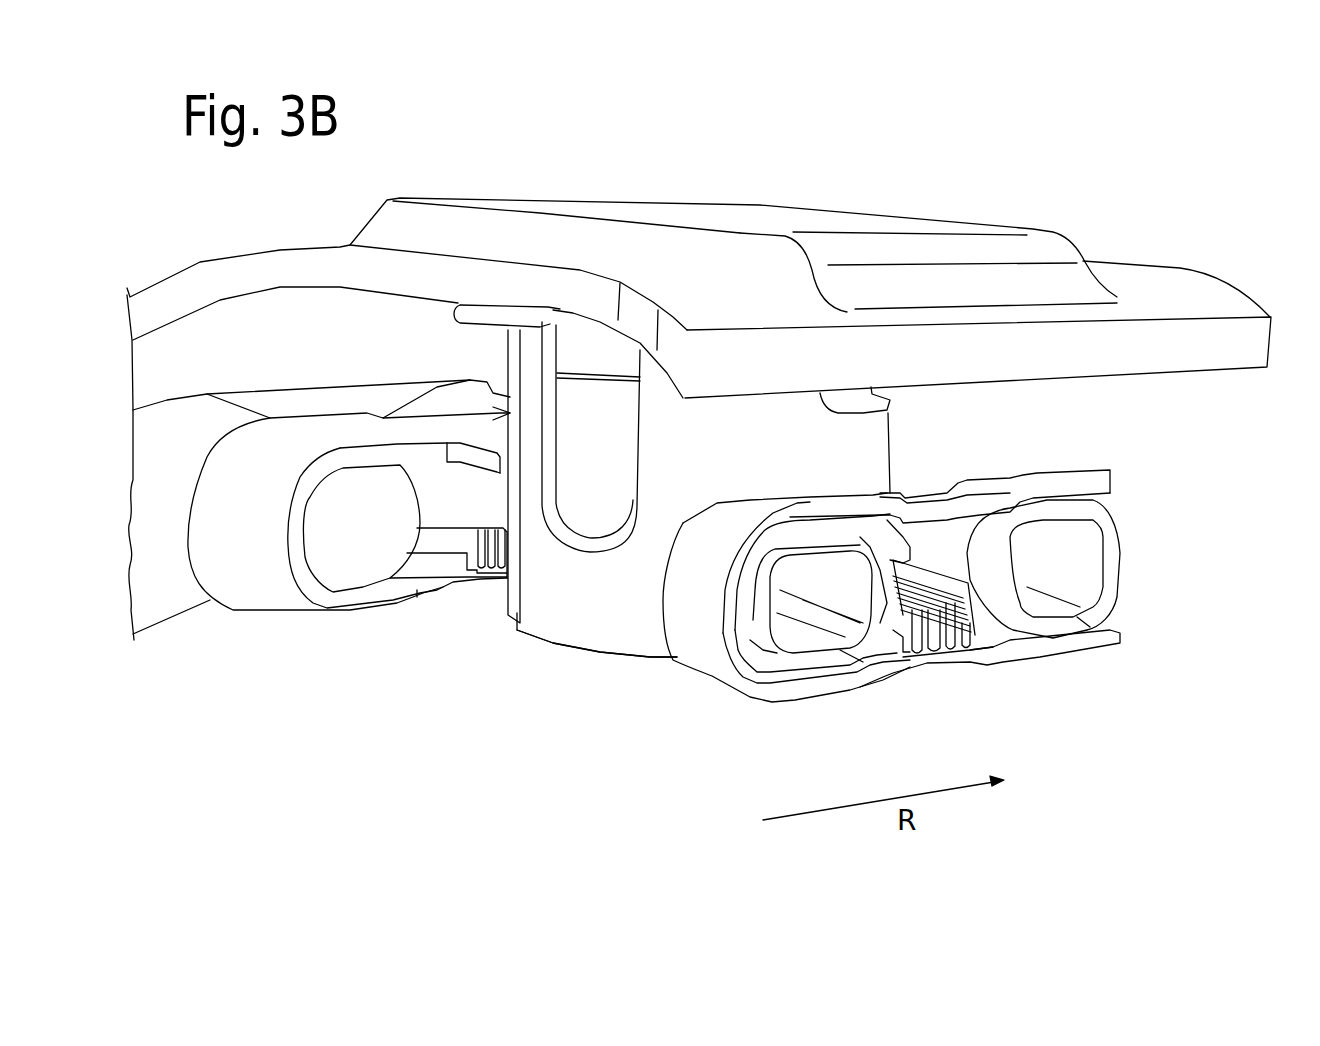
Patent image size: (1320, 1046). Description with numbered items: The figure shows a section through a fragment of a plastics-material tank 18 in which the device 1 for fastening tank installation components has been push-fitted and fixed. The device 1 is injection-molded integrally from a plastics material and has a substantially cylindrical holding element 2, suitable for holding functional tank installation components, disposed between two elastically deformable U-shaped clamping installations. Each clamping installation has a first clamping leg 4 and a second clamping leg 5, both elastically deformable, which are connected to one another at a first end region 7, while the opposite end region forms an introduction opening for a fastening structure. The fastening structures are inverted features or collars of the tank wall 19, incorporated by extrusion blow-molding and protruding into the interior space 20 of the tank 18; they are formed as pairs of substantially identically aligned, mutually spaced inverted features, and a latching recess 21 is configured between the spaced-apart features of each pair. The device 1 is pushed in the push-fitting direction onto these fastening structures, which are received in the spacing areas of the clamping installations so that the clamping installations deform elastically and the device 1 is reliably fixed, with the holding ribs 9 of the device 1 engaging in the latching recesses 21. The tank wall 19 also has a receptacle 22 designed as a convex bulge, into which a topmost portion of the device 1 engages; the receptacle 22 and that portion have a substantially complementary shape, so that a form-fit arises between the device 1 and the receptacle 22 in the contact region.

The device for fastening tank installation components 1 is at (603, 655).
The holding element 2 is at (555, 613).
The first clamping leg 4 is at (1100, 480).
The second clamping leg 5 is at (1107, 647).
The first end region 7 is at (240, 553).
The holding ribs 9 is at (475, 577).
The plastics-material tank 18 is at (866, 189).
The tank wall 19 is at (1173, 287).
The interior space 20 is at (300, 680).
The latching recess 21 is at (447, 505).
The receptacle 22 is at (1033, 247).